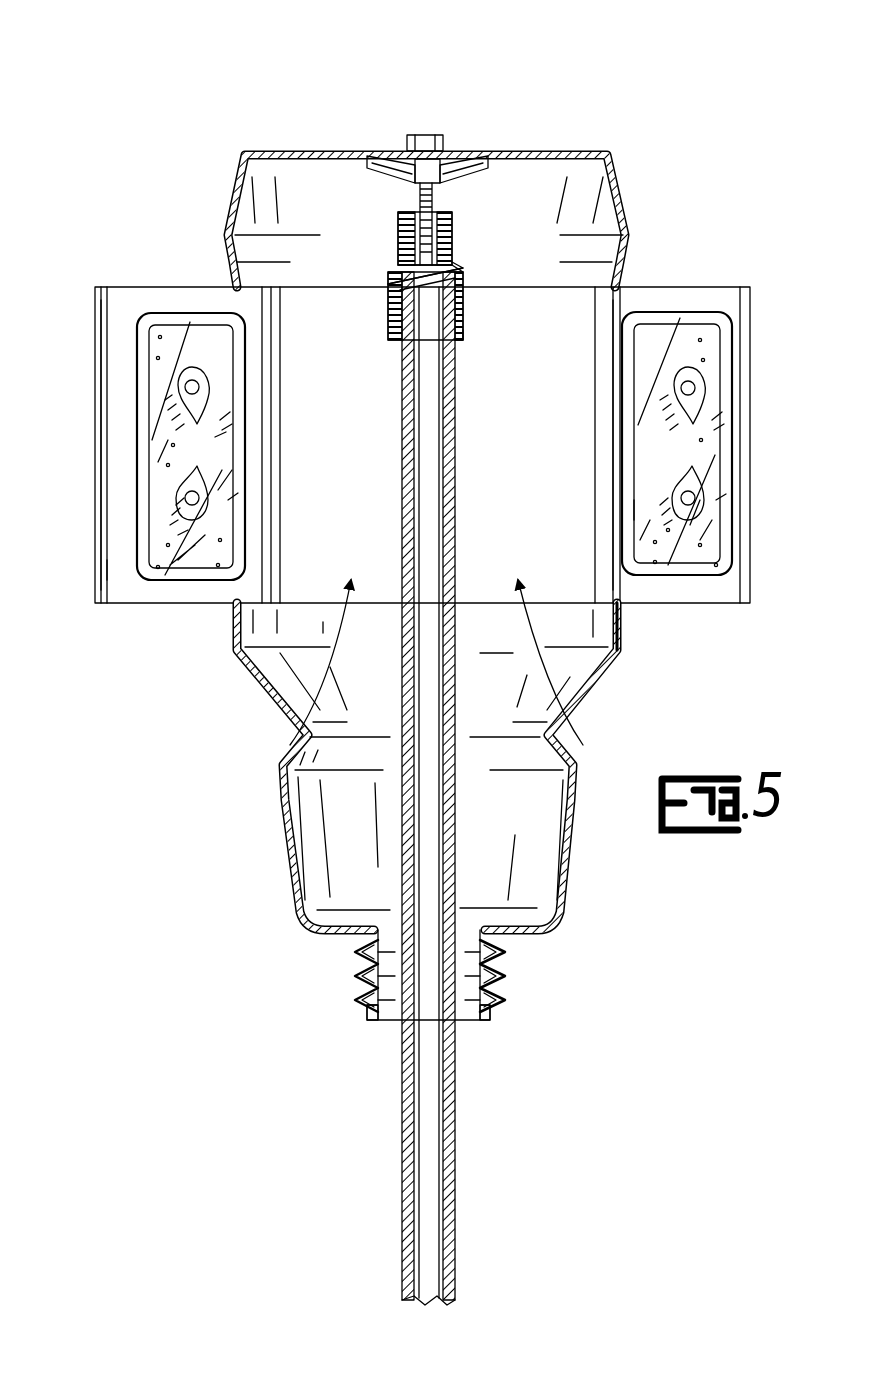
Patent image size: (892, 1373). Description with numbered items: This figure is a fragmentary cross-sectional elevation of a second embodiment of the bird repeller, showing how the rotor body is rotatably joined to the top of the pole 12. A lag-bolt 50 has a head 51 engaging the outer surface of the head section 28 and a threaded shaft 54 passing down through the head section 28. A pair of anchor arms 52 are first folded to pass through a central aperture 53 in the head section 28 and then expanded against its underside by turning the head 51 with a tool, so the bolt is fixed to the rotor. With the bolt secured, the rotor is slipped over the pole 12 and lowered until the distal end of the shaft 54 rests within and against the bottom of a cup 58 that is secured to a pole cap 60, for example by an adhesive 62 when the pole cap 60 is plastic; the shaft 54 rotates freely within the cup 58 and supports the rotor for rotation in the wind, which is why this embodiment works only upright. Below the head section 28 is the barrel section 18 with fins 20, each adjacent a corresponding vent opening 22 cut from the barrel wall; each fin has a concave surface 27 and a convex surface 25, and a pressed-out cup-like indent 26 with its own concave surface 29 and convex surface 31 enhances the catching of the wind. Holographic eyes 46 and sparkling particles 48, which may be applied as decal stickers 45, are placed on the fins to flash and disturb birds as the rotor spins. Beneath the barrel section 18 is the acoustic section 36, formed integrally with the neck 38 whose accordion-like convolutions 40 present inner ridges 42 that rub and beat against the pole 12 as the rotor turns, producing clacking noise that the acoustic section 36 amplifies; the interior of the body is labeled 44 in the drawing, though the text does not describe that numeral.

The lag-bolt 50 is at (440, 70).
The head 51 is at (412, 136).
The anchor arms 52 is at (395, 172).
The aperture 53 is at (444, 168).
The threaded shaft 54 is at (398, 213).
The head section 28 is at (612, 197).
The fins 20 is at (188, 287).
The convex fin surface 25 is at (727, 292).
The fin indent 26 is at (132, 438).
The concave fin surface 27 is at (122, 572).
The concave surface 29 is at (216, 420).
The convex surface 31 is at (648, 505).
The decal stickers 45 is at (720, 497).
The holographic eyes 46 is at (207, 388).
The sparkling particles 48 is at (222, 540).
The cup 58 is at (388, 262).
The pole cap 60 is at (462, 332).
The adhesive 62 is at (466, 268).
The chamber 44 is at (496, 633).
The barrel section 18 is at (621, 632).
The vent openings 22 is at (283, 700).
The acoustic section 36 is at (573, 830).
The accordion-like convolutions 40 is at (517, 965).
The ridges 42 is at (392, 1022).
The neck 38 is at (490, 1022).
The pole 12 is at (456, 1135).